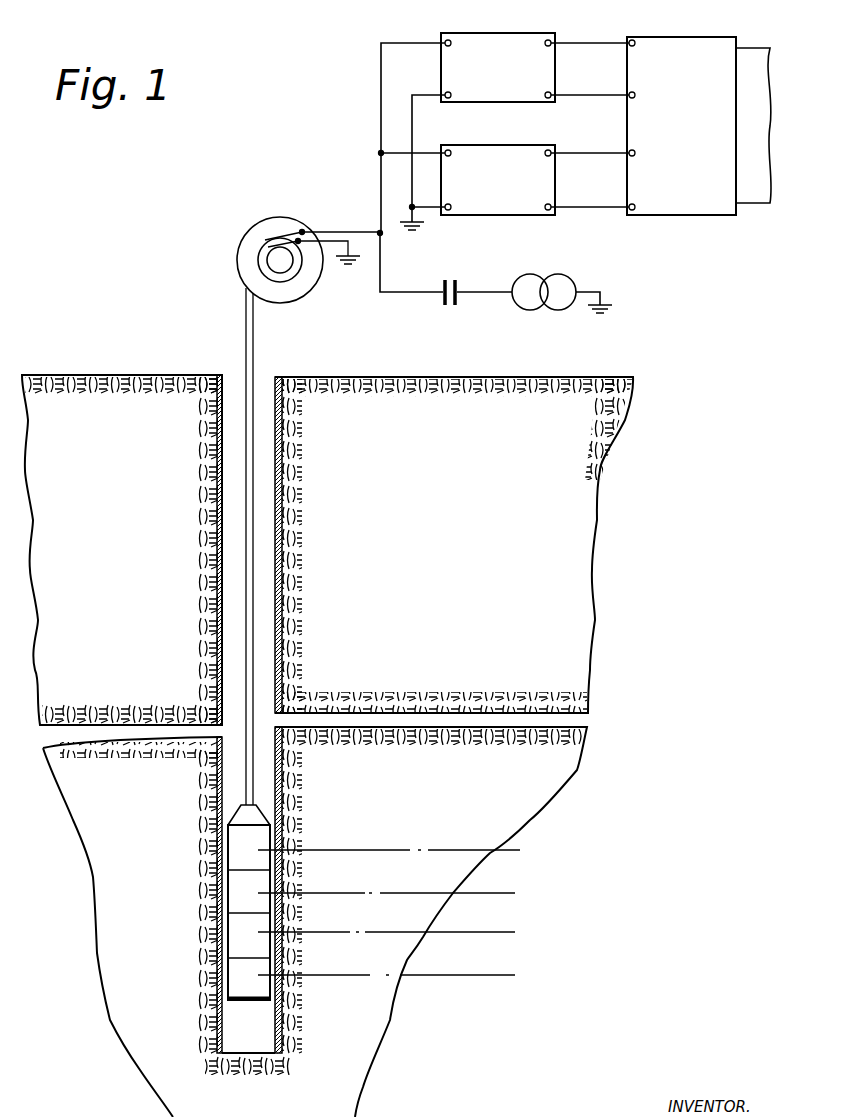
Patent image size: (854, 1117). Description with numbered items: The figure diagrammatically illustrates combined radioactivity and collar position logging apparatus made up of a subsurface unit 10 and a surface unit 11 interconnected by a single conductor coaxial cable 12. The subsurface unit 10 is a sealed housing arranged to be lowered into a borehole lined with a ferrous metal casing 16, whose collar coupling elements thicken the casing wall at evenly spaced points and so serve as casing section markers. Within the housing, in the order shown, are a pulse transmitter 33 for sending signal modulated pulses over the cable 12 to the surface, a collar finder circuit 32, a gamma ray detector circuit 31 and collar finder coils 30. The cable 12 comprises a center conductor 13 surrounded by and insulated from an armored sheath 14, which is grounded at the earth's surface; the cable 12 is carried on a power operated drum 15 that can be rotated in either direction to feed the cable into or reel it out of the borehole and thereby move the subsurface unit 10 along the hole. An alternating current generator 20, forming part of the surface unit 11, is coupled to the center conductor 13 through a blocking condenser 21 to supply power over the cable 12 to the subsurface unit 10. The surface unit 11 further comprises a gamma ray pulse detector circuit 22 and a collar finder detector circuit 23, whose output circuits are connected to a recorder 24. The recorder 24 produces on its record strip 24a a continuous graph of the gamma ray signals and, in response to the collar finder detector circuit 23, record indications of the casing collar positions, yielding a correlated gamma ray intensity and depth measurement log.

The subsurface unit 10 is at (276, 814).
The surface unit 11 is at (500, 136).
The single conductor coaxial cable 12 is at (262, 356).
The center conductor 13 is at (373, 240).
The armored sheath 14 is at (331, 232).
The power operated drum 15 is at (237, 251).
The ferrous metal casing 16 is at (281, 575).
The alternating current generator 20 is at (535, 280).
The blocking condenser 21 is at (458, 283).
The gamma ray pulse detector circuit 22 is at (495, 34).
The collar finder detector circuit 23 is at (504, 145).
The recorder 24 is at (676, 38).
The record strip 24a is at (753, 197).
The collar finder coils 30 is at (235, 963).
The gamma ray detector circuit 31 is at (233, 930).
The collar finder circuit 32 is at (238, 888).
The pulse transmitter 33 is at (240, 845).